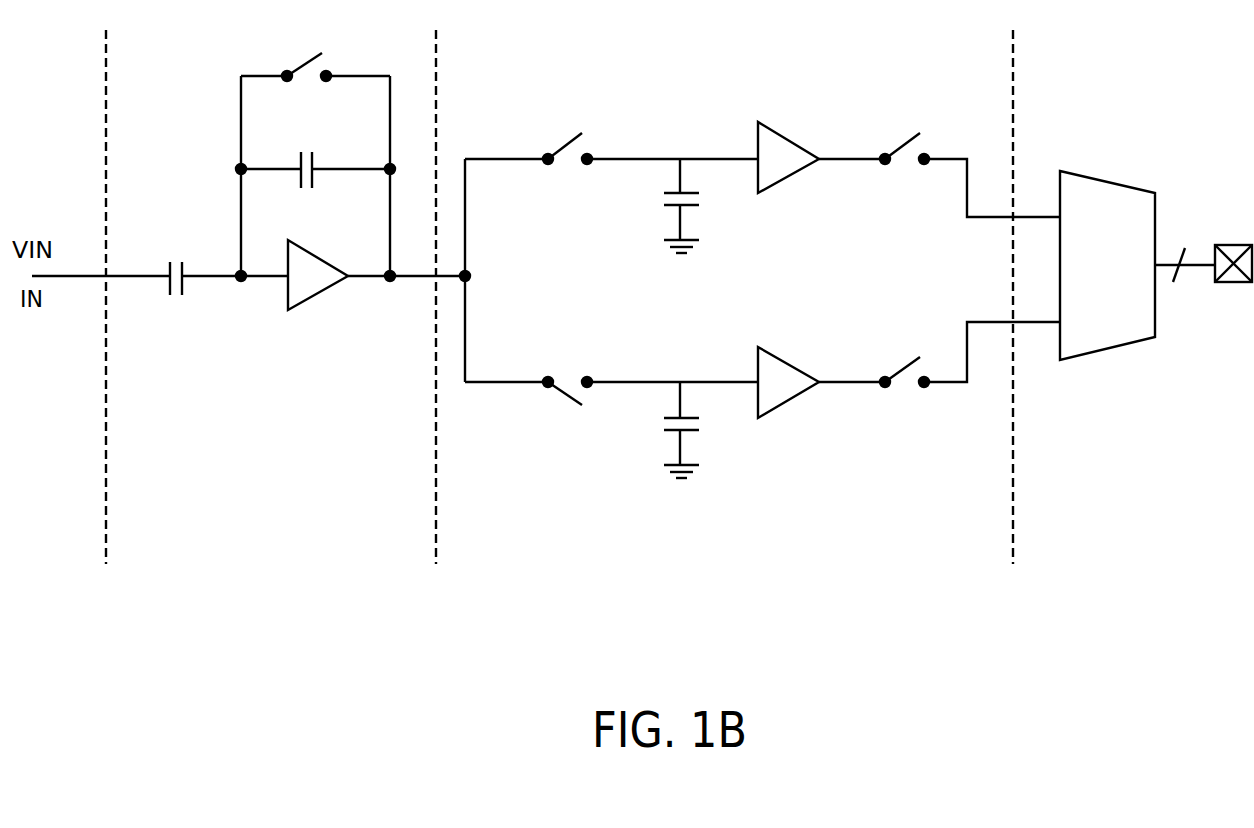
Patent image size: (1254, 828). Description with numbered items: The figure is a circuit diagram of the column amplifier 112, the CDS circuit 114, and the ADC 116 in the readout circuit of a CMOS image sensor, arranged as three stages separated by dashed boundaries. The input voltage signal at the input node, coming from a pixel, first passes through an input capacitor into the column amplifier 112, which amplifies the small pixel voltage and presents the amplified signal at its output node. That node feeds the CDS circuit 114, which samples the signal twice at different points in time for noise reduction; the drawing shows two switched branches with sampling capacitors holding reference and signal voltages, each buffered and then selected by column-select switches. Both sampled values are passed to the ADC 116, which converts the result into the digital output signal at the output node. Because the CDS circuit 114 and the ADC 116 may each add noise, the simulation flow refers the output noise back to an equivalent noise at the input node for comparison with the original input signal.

The column amplifier 112 is at (249, 547).
The CDS circuit 114 is at (765, 547).
The ADC 116 is at (1157, 547).